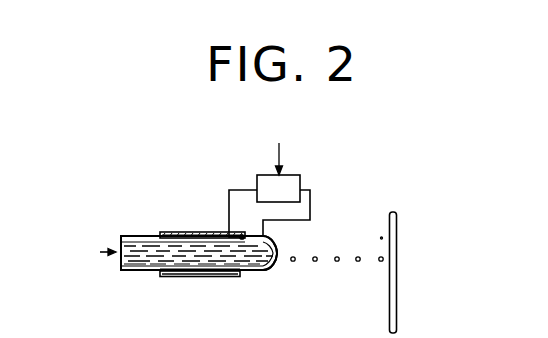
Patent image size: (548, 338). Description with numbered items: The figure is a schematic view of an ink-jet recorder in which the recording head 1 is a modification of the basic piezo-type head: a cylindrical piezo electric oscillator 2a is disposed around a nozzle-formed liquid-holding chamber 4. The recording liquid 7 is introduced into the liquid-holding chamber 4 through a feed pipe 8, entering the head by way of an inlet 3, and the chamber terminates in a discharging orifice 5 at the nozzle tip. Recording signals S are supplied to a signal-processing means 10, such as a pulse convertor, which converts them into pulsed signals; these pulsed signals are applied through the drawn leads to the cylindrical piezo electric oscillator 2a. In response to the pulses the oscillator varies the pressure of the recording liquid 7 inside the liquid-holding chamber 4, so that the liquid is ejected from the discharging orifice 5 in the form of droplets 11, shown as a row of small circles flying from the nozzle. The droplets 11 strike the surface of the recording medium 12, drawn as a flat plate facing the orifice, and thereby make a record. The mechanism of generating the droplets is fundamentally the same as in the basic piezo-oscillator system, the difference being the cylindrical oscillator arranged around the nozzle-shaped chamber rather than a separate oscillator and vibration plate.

The recording head 1 is at (192, 226).
The piezo electric oscillator 2a is at (195, 279).
The inlet 3 is at (158, 233).
The liquid-holding chamber 4 is at (243, 275).
The discharging orifice 5 is at (276, 257).
The recording liquid 7 is at (131, 236).
The feed pipe 8 is at (141, 277).
The signal-processing means 10 is at (300, 185).
The droplets 11 is at (337, 255).
The recording medium 12 is at (397, 278).
The recording signals S is at (277, 147).